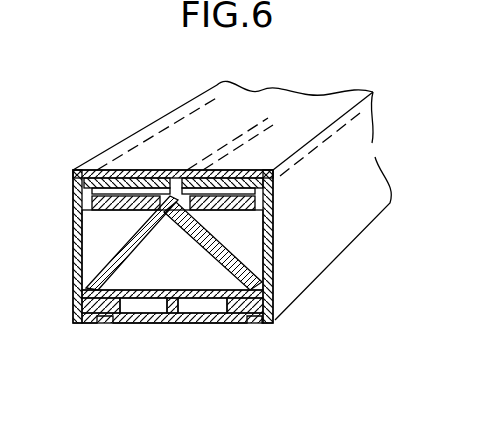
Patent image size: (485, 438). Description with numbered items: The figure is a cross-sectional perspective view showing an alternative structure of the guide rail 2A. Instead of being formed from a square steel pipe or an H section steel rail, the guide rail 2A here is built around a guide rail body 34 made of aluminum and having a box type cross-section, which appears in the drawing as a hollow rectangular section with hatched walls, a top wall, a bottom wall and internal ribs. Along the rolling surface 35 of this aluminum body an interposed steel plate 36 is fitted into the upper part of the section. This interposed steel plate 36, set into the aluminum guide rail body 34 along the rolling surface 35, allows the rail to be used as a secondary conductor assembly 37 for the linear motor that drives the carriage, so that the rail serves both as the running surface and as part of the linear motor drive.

The guide rail 2A is at (296, 254).
The guide rail body 34 is at (72, 243).
The rolling surface 35 is at (178, 140).
The interposed steel plate 36 is at (186, 200).
The secondary conductor assembly 37 is at (140, 170).